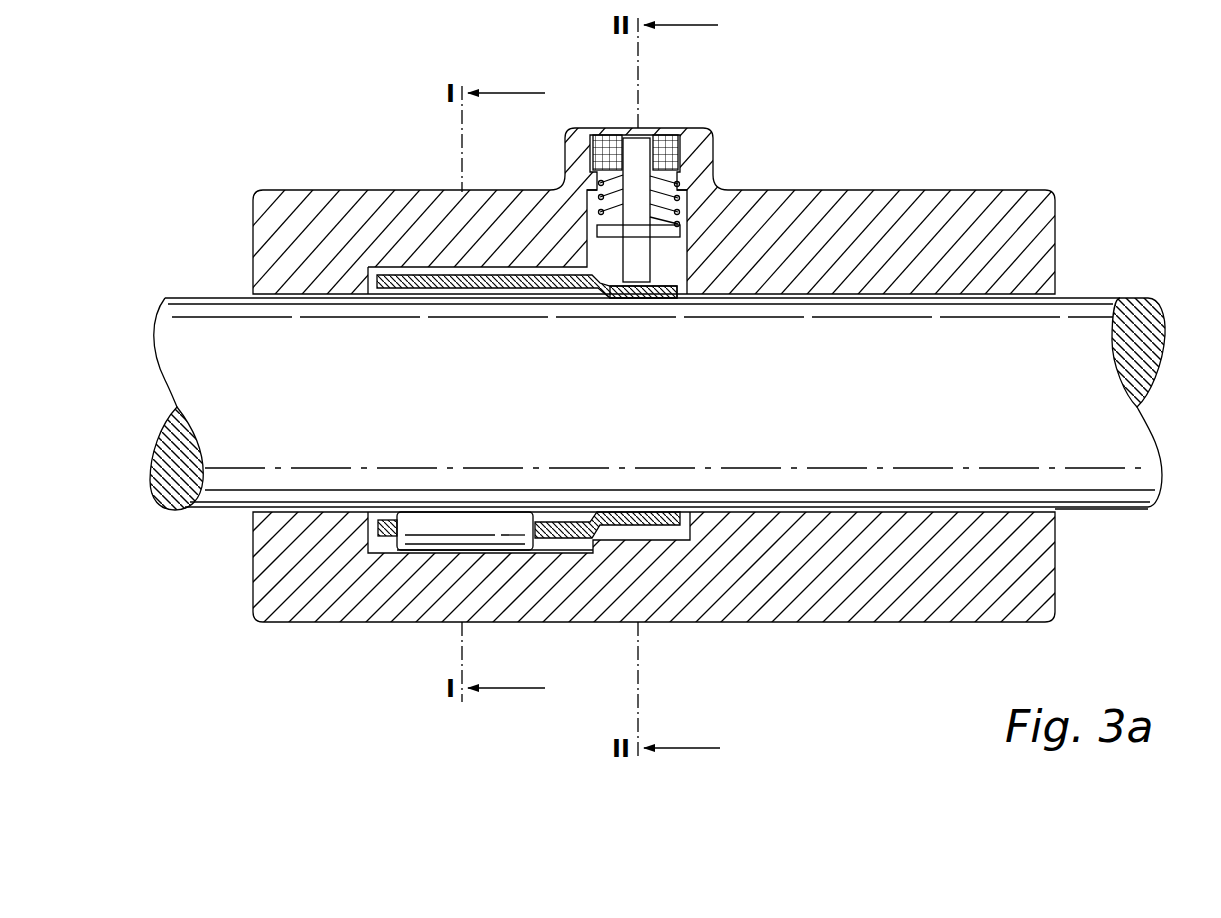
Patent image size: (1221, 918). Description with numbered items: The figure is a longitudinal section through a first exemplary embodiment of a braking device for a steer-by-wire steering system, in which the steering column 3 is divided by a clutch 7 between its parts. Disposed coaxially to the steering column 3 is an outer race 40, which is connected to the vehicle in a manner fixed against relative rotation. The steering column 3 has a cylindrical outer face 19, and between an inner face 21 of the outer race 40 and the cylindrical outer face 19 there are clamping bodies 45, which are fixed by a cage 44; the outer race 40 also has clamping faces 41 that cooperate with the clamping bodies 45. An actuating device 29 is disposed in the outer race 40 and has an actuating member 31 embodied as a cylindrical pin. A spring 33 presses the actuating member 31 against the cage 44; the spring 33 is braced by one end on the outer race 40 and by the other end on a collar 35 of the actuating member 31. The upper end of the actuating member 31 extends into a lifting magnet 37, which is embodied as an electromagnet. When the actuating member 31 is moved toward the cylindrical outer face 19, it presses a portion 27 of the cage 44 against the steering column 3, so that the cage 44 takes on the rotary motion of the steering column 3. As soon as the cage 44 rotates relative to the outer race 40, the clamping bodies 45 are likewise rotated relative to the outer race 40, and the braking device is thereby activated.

The steering column 3 is at (1087, 335).
The clutch 7 is at (610, 378).
The cylindrical outer face 19 is at (1093, 512).
The inner face 21 is at (575, 550).
The portion of the cage 27 is at (672, 300).
The actuating device 29 is at (615, 115).
The actuating member 31 is at (641, 272).
The spring 33 is at (606, 202).
The collar 35 is at (616, 242).
The lifting magnet 37 is at (667, 150).
The outer race 40 is at (285, 556).
The clamping faces 41 is at (540, 548).
The cage 44 is at (392, 282).
The clamping bodies 45 is at (425, 540).